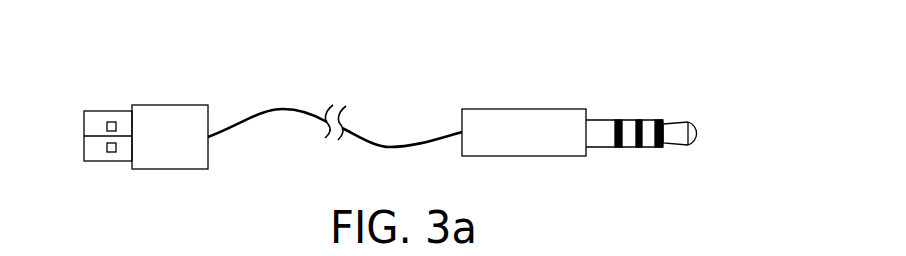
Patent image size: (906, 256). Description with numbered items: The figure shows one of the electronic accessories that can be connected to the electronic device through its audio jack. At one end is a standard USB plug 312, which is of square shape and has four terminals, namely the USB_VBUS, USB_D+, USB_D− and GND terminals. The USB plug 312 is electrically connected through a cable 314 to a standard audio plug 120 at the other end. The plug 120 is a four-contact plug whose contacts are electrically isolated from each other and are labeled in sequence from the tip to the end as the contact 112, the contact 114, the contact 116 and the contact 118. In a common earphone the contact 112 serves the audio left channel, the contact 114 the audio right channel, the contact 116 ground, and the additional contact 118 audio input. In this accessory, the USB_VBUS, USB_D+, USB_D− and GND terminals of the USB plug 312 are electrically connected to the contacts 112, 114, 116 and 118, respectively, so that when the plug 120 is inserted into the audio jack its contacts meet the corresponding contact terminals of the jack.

The USB plug 312 is at (180, 118).
The cable 314 is at (388, 145).
The plug 120 is at (513, 103).
The contact 118 is at (603, 129).
The contact 116 is at (631, 129).
The contact 114 is at (650, 129).
The contact 112 is at (690, 137).